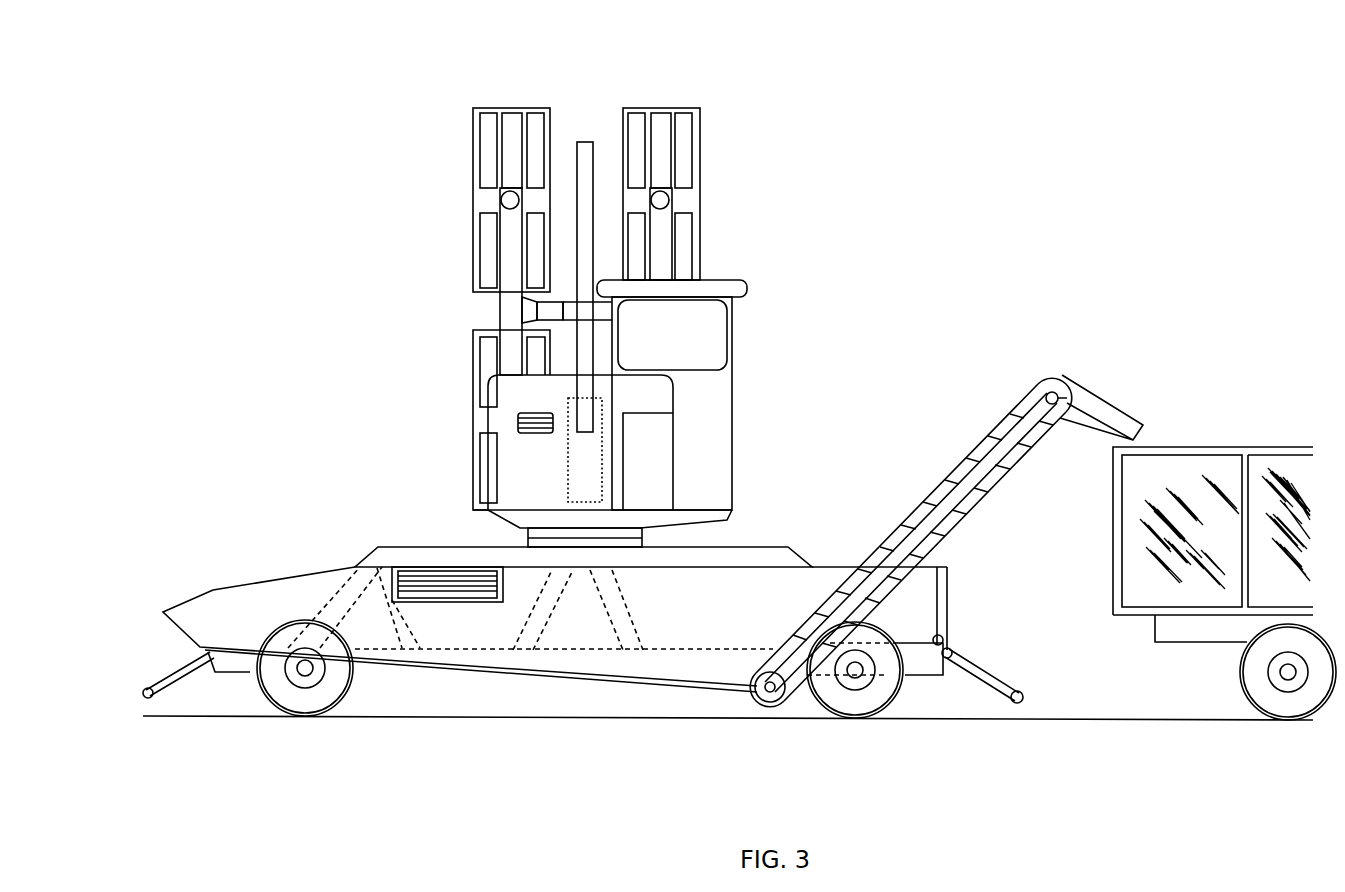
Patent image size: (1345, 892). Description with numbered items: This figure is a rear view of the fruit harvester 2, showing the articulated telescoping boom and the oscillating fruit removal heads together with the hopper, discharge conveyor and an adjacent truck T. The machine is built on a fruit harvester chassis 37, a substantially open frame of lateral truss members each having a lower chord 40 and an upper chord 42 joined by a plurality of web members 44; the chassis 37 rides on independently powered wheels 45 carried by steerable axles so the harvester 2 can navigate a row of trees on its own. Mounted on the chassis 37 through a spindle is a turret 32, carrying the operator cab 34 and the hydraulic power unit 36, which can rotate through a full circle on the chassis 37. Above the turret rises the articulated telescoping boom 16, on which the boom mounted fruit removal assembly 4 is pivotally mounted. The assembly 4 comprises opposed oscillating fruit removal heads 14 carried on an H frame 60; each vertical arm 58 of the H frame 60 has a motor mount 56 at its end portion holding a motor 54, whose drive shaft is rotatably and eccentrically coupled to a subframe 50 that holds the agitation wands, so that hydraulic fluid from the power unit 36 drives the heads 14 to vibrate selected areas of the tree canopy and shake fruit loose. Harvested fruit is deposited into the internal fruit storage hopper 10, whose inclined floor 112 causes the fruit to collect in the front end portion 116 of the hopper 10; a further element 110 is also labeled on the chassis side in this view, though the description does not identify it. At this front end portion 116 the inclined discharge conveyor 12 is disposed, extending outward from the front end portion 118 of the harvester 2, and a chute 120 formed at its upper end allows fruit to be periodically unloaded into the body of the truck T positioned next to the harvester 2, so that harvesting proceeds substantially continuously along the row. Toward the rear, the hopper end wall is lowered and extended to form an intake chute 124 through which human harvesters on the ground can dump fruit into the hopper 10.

The fruit harvester 2 is at (850, 215).
The boom mounted fruit removal assembly 4 is at (647, 52).
The internal fruit storage hopper 10 is at (656, 608).
The inclined discharge conveyor 12 is at (957, 470).
The oscillating fruit removal head 14 is at (458, 82).
The articulated telescoping boom 16 is at (585, 136).
The turret 32 is at (760, 372).
The operator cab 34 is at (712, 327).
The hydraulic power unit 36 is at (486, 397).
The fruit harvester chassis 37 is at (426, 520).
The lower chord 40 is at (386, 542).
The upper chord 42 is at (372, 678).
The web member 44 is at (327, 612).
The wheel 45 is at (306, 700).
The subframe 50 is at (473, 138).
The motor 54 is at (495, 199).
The motor mount 56 is at (498, 315).
The vertical arm 58 is at (497, 235).
The H frame 60 is at (455, 282).
The control box 110 is at (412, 598).
The inclined floor 112 is at (278, 645).
The front end portion 116 is at (680, 665).
The front end portion 118 is at (962, 577).
The chute 120 is at (1100, 392).
The intake chute 124 is at (188, 603).
The truck T is at (1205, 440).